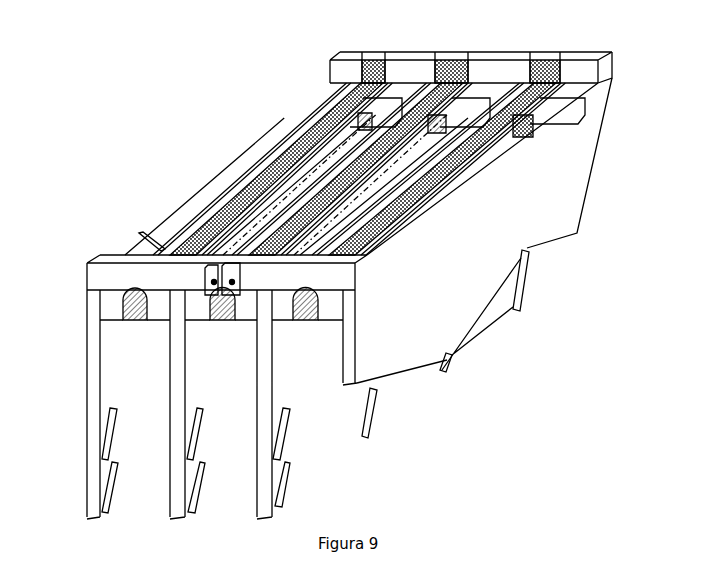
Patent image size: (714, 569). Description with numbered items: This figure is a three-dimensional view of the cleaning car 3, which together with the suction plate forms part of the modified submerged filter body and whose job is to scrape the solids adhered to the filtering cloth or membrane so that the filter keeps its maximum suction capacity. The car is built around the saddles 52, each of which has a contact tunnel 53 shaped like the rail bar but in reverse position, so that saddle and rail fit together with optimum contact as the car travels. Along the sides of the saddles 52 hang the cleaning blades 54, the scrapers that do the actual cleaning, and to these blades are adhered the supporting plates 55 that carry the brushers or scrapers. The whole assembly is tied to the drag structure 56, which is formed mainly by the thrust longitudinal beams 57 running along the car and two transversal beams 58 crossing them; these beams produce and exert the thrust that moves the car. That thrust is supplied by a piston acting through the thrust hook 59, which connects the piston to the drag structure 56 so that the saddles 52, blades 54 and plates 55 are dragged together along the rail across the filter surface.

The cleaning car 3 is at (330, 143).
The saddle 52 is at (113, 303).
The contact tunnel 53 is at (137, 313).
The cleaning blade 54 is at (273, 127).
The supporting plate 55 is at (525, 298).
The drag structure 56 is at (470, 58).
The thrust longitudinal beam 57 is at (235, 197).
The transversal beam 58 is at (613, 60).
The thrust hook 59 is at (207, 277).